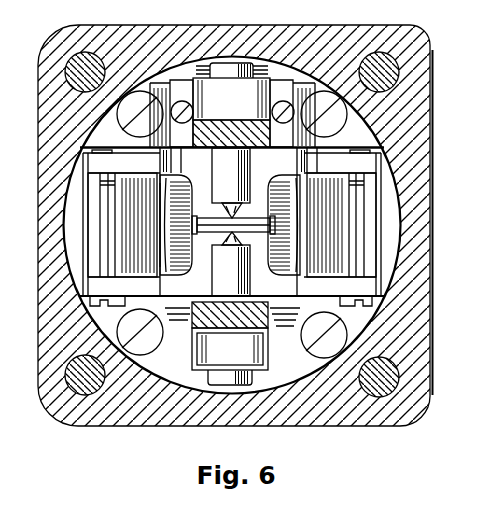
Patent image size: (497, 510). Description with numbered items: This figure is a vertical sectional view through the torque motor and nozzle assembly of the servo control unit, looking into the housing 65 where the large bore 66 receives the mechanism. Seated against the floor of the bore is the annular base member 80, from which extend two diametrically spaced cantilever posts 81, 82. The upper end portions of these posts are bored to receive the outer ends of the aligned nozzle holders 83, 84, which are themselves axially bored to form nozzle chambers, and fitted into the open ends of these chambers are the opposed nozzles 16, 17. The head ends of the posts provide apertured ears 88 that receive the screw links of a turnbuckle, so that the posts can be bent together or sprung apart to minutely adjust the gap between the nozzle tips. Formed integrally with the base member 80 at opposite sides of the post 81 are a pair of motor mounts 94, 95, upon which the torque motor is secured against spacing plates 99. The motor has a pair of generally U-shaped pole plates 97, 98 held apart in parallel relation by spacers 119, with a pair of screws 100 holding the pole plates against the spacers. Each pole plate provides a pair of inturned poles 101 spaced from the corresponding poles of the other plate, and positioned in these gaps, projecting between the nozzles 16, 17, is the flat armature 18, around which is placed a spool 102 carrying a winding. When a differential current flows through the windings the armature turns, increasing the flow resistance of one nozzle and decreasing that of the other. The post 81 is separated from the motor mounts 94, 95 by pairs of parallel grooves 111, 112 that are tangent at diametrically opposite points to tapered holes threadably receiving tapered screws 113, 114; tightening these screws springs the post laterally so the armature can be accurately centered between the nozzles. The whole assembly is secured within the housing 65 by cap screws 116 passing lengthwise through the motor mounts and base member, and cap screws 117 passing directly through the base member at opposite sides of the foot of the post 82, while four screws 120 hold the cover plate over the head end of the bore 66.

The nozzle 16 is at (232, 203).
The nozzle 17 is at (232, 240).
The armature 18 is at (268, 231).
The housing 65 is at (412, 178).
The large bore 66 is at (398, 258).
The base member 80 is at (158, 370).
The cantilever post 81 is at (219, 99).
The cantilever post 82 is at (221, 351).
The nozzle holder 83 is at (230, 63).
The nozzle holder 84 is at (232, 387).
The apertured ears 88 is at (260, 140).
The motor mount 94 is at (93, 138).
The motor mount 95 is at (349, 143).
The pole plate 97 is at (121, 171).
The pole plate 98 is at (121, 291).
The spacing plates 99 is at (80, 150).
The screws 100 is at (105, 228).
The inturned pole 101 is at (192, 199).
The spool 102 is at (166, 216).
The parallel groove 111 is at (174, 88).
The parallel groove 112 is at (193, 137).
The tapered screw 113 is at (190, 112).
The tapered screw 114 is at (272, 99).
The cap screws 116 is at (120, 113).
The cap screws 117 is at (310, 330).
The spacers 119 is at (93, 193).
The screws 120 is at (385, 377).